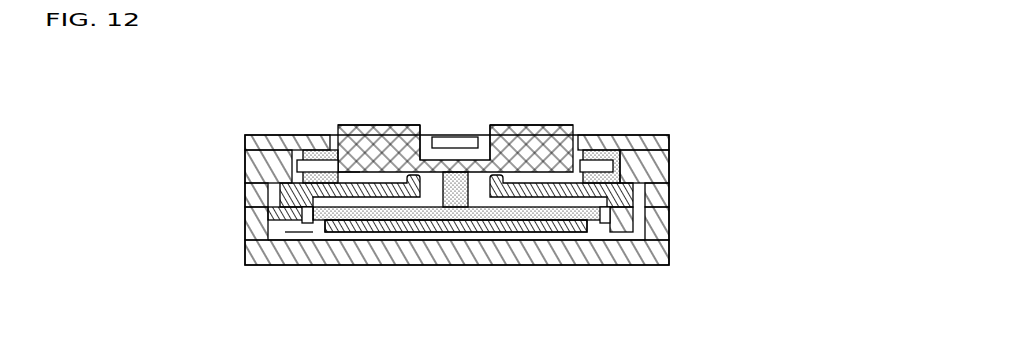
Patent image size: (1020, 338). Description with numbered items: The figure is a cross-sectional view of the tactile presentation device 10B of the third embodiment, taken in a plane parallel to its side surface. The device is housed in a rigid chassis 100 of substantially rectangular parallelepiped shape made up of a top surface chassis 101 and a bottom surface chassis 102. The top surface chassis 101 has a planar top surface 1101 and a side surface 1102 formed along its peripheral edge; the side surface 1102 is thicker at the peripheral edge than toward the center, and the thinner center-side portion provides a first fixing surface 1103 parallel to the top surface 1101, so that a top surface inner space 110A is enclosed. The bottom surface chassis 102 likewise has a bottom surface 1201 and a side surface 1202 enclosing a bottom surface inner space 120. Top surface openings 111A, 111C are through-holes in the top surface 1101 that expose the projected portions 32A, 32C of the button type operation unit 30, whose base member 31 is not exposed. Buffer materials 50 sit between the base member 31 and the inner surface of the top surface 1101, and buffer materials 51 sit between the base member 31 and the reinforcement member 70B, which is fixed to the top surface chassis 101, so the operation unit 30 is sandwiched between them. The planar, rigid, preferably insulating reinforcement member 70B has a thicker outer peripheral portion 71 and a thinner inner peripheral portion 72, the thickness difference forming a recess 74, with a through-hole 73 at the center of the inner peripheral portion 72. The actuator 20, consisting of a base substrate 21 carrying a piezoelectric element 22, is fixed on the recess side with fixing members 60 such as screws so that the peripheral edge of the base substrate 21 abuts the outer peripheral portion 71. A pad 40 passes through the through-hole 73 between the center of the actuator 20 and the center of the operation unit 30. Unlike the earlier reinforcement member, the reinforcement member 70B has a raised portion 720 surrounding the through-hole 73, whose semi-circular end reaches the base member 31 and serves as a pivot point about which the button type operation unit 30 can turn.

The tactile presentation device 10B is at (628, 52).
The actuator 20 is at (460, 269).
The base substrate 21 is at (425, 214).
The piezoelectric element 22 is at (392, 228).
The button type operation unit 30 is at (354, 122).
The base member 31 is at (376, 124).
The projected portion 32A is at (536, 135).
The projected portion 32C is at (395, 124).
The pad 40 is at (456, 210).
The buffer material 50 is at (312, 152).
The buffer material 51 is at (300, 165).
The fixing member 60 is at (604, 226).
The reinforcement member 70B is at (407, 251).
The outer peripheral portion 71 is at (266, 213).
The inner peripheral portion 72 is at (282, 220).
The through-hole 73 is at (482, 208).
The recess 74 is at (343, 214).
The raised portion 720 is at (312, 224).
The chassis 100 is at (457, 204).
The top surface chassis 101 is at (454, 156).
The bottom surface chassis 102 is at (484, 255).
The top surface inner space 110A is at (347, 170).
The top surface opening 111A is at (484, 128).
The top surface opening 111C is at (423, 133).
The bottom surface inner space 120 is at (557, 241).
The top surface 1101 is at (625, 150).
The side surface 1102 is at (648, 162).
The first fixing surface 1103 is at (648, 190).
The bottom surface 1201 is at (635, 262).
The side surface 1202 is at (655, 250).